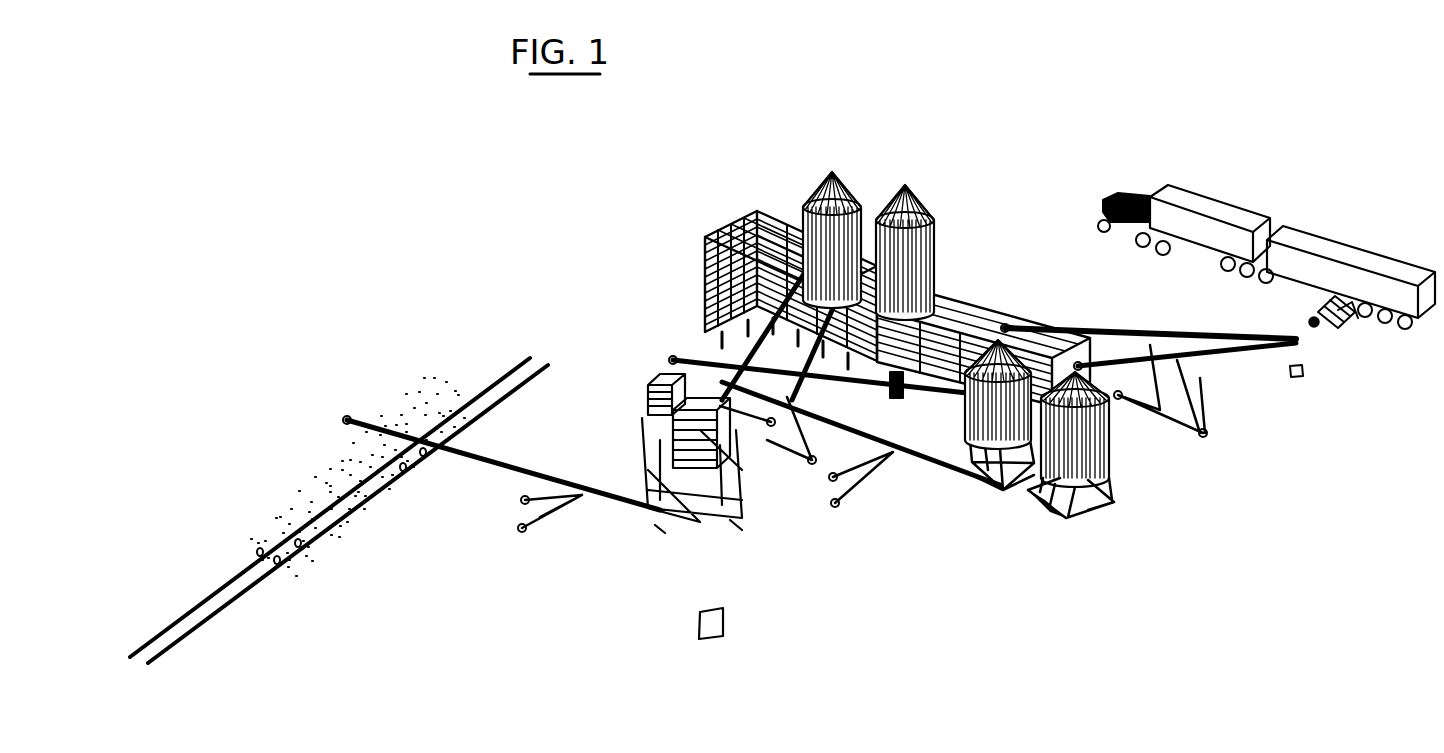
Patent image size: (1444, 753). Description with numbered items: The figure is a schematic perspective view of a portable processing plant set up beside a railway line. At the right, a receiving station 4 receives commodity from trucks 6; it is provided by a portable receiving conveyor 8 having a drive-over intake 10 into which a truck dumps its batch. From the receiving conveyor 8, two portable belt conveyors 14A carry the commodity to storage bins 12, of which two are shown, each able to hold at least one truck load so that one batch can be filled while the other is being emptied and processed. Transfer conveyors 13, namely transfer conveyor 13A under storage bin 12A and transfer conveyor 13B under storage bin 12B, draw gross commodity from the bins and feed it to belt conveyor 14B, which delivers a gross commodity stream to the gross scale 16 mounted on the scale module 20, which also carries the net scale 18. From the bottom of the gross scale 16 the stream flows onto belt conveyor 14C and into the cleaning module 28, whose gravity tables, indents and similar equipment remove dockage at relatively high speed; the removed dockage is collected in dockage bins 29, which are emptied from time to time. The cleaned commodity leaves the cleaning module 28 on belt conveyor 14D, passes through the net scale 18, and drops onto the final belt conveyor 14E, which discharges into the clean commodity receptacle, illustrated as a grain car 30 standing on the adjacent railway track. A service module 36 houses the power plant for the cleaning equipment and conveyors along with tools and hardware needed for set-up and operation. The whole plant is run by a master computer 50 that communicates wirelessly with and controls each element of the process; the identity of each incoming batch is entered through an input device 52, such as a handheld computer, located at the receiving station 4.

The receiving station 4 is at (1343, 340).
The trucks 6 is at (1215, 203).
The receiving conveyor 8 is at (1310, 327).
The drive-over intake 10 is at (1342, 310).
The storage bins 12 is at (1092, 516).
The storage bin 12A is at (957, 428).
The storage bin 12B is at (1075, 429).
The transfer conveyors 13 is at (982, 471).
The transfer conveyor 13A is at (1002, 465).
The transfer conveyor 13B is at (1017, 500).
The belt conveyors 14A is at (1080, 327).
The belt conveyor 14B is at (907, 463).
The belt conveyor 14C is at (735, 373).
The belt conveyor 14D is at (832, 388).
The final belt conveyor 14E is at (493, 463).
The gross scale 16 is at (648, 402).
The net scale 18 is at (725, 443).
The scale module 20 is at (674, 453).
The cleaning module 28 is at (735, 217).
The dockage bins 29 is at (908, 186).
The grain car 30 is at (313, 463).
The service module 36 is at (967, 330).
The master computer 50 is at (723, 627).
The input device 52 is at (1291, 377).